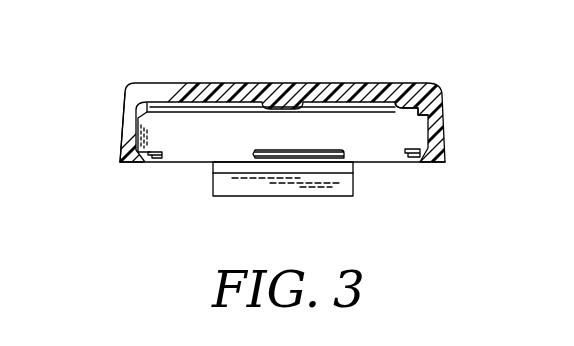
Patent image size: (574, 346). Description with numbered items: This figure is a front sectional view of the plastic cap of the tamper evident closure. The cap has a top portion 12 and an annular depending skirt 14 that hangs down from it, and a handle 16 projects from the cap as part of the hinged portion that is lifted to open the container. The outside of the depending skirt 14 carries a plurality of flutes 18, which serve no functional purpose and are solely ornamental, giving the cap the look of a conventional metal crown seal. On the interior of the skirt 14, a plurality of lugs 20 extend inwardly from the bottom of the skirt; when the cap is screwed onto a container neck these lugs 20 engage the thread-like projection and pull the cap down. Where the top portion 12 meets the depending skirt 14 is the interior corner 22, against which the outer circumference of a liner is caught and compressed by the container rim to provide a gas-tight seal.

The top portion 12 is at (225, 83).
The annular depending skirt 14 is at (122, 105).
The handle 16 is at (213, 180).
The flutes 18 is at (124, 128).
The lugs 20 is at (257, 150).
The interior corner 22 is at (396, 102).